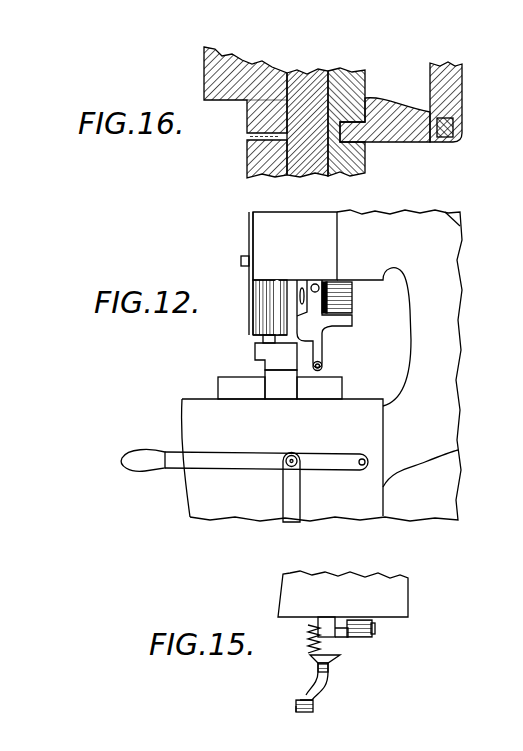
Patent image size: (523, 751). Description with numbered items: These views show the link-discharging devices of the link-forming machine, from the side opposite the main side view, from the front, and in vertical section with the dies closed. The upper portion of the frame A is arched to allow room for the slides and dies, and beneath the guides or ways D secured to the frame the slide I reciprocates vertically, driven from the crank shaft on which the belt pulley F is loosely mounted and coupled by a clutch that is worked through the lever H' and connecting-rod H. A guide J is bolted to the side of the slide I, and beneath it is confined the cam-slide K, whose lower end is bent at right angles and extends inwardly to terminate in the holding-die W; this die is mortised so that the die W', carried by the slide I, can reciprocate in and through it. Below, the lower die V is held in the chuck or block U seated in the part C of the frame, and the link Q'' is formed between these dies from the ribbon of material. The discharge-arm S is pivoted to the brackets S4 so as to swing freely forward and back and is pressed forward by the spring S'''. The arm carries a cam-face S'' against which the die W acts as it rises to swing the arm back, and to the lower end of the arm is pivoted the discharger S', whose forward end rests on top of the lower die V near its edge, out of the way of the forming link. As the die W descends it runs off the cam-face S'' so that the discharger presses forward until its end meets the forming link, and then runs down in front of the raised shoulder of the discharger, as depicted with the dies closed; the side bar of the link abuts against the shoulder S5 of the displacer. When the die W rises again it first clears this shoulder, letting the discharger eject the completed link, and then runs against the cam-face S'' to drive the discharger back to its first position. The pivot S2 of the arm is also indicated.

In FIG. 16, the frame portion R is at (245, 90).
In FIG. 16, the holding-die W is at (267, 110).
In FIG. 12, the holding-die W is at (276, 356).
In FIG. 16, the link Q'' is at (245, 133).
In FIG. 16, the lower die V is at (267, 159).
In FIG. 12, the lower die V is at (281, 384).
In FIG. 16, the pulley F is at (326, 122).
In FIG. 16, the discharger S' is at (385, 120).
In FIG. 12, the discharger S' is at (326, 358).
In FIG. 15, the discharger S' is at (317, 706).
In FIG. 16, the discharge-arm S is at (446, 102).
In FIG. 12, the discharge-arm S is at (324, 324).
In FIG. 15, the discharge-arm S is at (319, 658).
In FIG. 12, the frame A is at (326, 365).
In FIG. 12, the guides or ways D is at (295, 246).
In FIG. 15, the guides or ways D is at (343, 594).
In FIG. 12, the guide J is at (250, 226).
In FIG. 12, the slide I is at (270, 307).
In FIG. 12, the cam-slide K is at (256, 340).
In FIG. 12, the die W' is at (246, 350).
In FIG. 12, the holding chuck or block U is at (280, 388).
In FIG. 12, the part of frame C is at (282, 458).
In FIG. 12, the lever H' is at (244, 451).
In FIG. 12, the connecting-rod H is at (291, 488).
In FIG. 12, the pivot screw S2 is at (316, 283).
In FIG. 12, the cam-face S'' is at (309, 307).
In FIG. 15, the cam-face S'' is at (339, 671).
In FIG. 12, the spring S''' is at (347, 299).
In FIG. 15, the spring S''' is at (302, 639).
In FIG. 15, the brackets S4 is at (368, 637).
In FIG. 15, the shoulder S5 is at (298, 710).